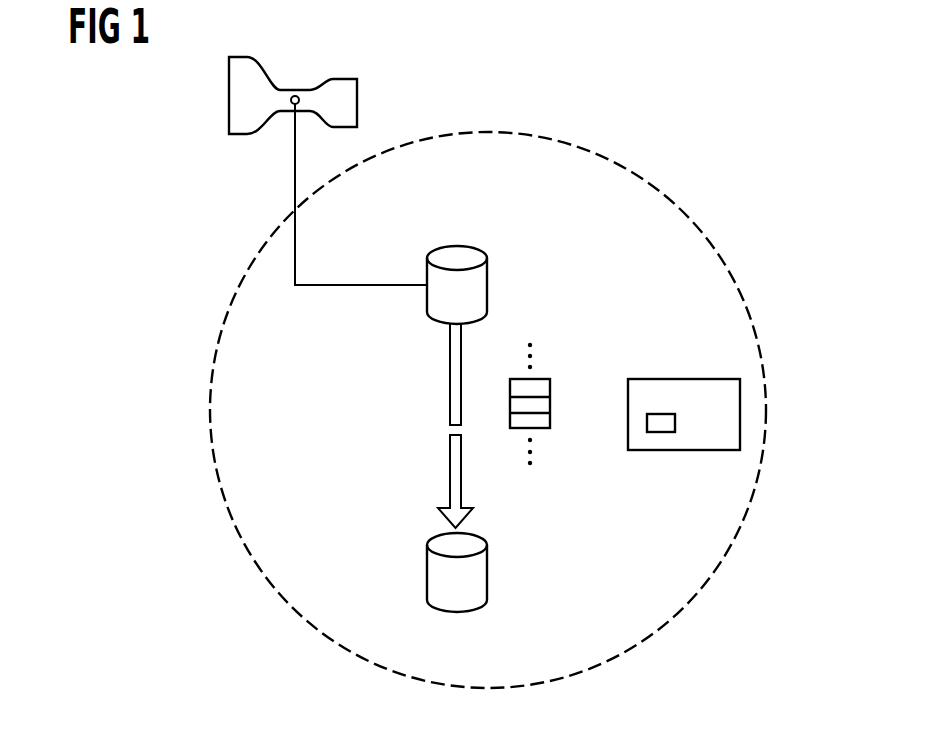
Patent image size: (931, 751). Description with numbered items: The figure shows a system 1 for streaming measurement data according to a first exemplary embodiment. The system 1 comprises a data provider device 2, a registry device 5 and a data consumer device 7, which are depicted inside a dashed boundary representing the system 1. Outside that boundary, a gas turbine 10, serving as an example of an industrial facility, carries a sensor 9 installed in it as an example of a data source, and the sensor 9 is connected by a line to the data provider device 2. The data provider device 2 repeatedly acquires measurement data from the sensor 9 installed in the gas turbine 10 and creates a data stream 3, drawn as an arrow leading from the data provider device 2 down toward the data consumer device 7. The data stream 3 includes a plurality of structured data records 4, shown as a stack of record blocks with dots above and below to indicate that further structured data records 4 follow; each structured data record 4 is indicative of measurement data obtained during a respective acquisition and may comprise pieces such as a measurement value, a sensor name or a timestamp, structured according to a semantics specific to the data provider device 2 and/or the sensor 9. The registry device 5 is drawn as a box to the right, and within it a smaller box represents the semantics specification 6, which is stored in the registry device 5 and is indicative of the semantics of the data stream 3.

The system 1 is at (723, 211).
The data provider device 2 is at (487, 284).
The data stream 3 is at (450, 366).
The structured data records 4 is at (552, 371).
The registry device 5 is at (740, 410).
The semantics specification 6 is at (661, 425).
The data consumer device 7 is at (487, 575).
The sensor 9 is at (294, 95).
The gas turbine 10 is at (229, 92).